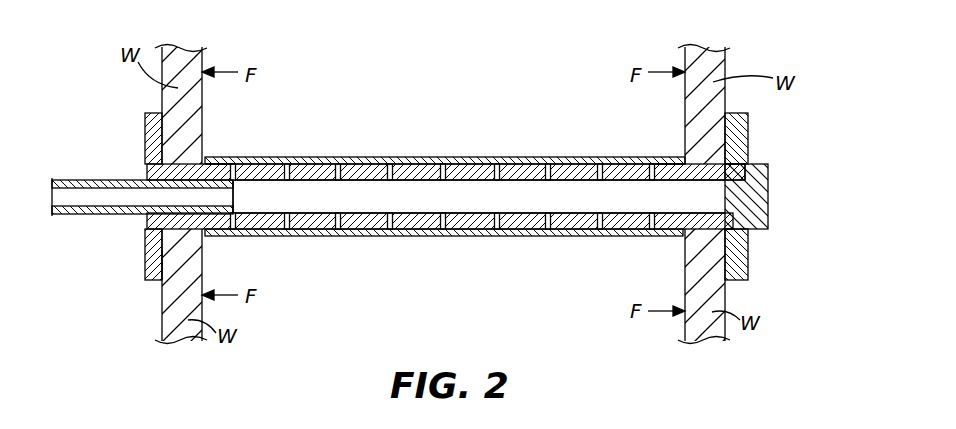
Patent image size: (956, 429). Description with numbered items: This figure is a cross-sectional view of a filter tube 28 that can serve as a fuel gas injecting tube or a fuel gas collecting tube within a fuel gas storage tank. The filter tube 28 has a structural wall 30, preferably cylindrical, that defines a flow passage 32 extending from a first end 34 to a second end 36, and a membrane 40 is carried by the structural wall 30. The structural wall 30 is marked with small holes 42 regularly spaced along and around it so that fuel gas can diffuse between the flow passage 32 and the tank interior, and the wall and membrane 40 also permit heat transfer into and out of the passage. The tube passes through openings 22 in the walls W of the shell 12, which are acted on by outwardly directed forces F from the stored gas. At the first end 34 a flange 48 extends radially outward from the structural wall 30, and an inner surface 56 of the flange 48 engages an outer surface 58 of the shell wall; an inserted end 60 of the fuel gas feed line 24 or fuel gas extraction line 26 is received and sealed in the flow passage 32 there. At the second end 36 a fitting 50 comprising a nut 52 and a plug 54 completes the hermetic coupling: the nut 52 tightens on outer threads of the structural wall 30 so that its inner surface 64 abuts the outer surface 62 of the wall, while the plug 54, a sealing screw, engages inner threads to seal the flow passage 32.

The shell 12 is at (736, 56).
The openings 22 is at (198, 173).
The fuel gas feed line 24 is at (133, 174).
The fuel gas extraction line 26 is at (88, 180).
The filter tube 28 is at (446, 205).
The structural wall 30 is at (313, 237).
The flow passage 32 is at (434, 208).
The first end 34 is at (162, 182).
The second end 36 is at (745, 172).
The membrane 40 is at (573, 157).
The holes 42 is at (548, 164).
The flange 48 is at (152, 257).
The fitting 50 is at (735, 188).
The nut 52 is at (737, 135).
The plug 54 is at (760, 202).
The inner surface 56 is at (178, 268).
The outer surface 58 is at (162, 340).
The inserted end 60 is at (233, 186).
The outer surface 62 is at (727, 300).
The inner surface 64 is at (727, 261).